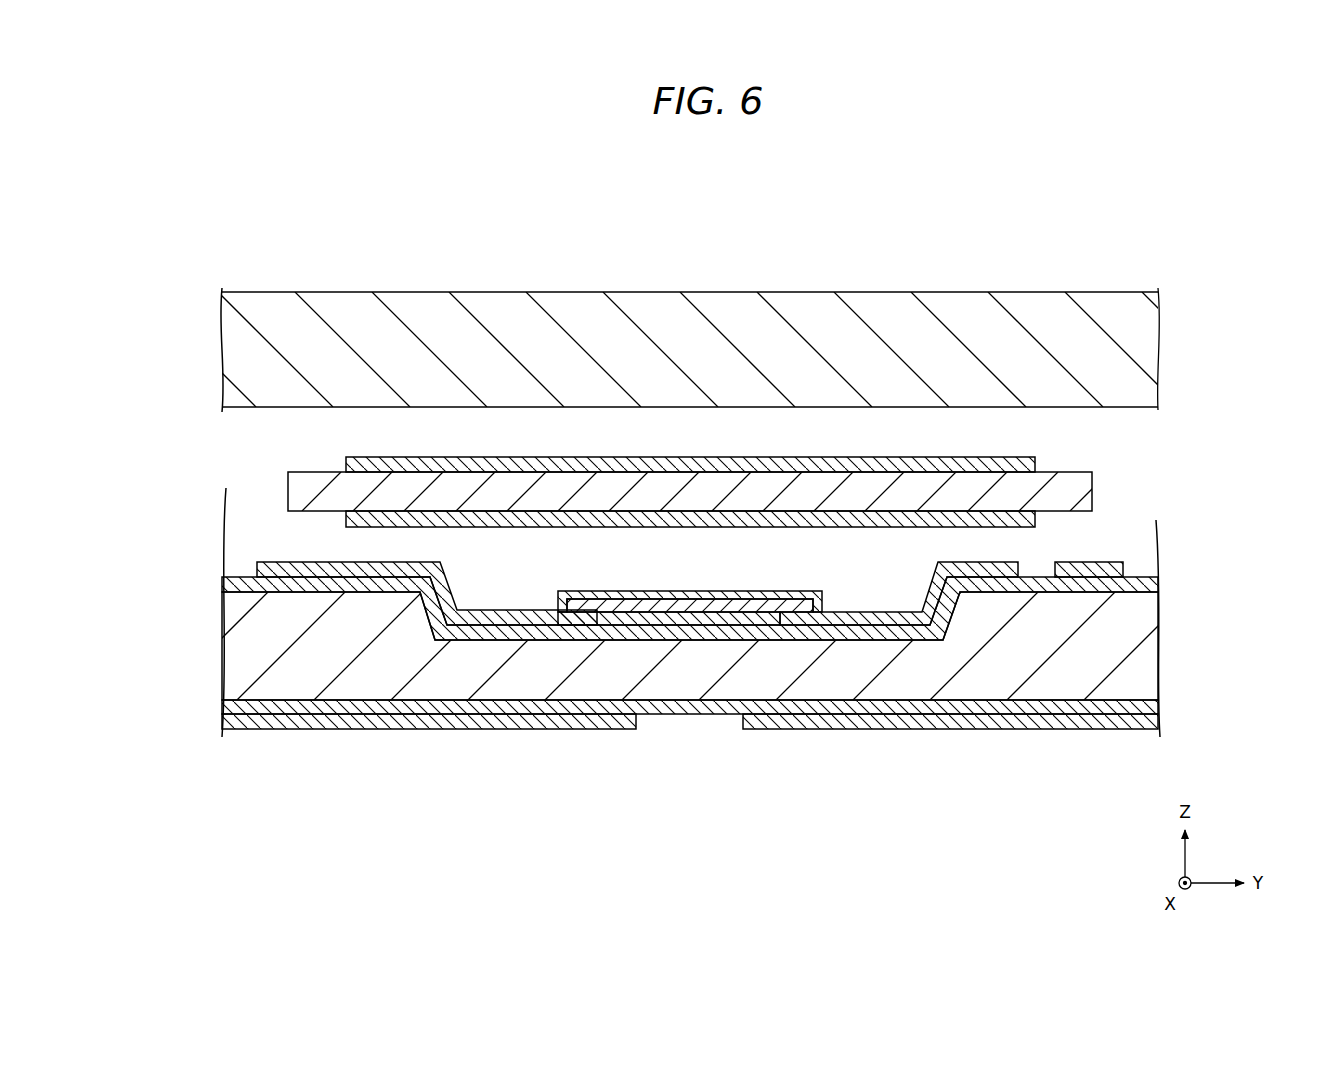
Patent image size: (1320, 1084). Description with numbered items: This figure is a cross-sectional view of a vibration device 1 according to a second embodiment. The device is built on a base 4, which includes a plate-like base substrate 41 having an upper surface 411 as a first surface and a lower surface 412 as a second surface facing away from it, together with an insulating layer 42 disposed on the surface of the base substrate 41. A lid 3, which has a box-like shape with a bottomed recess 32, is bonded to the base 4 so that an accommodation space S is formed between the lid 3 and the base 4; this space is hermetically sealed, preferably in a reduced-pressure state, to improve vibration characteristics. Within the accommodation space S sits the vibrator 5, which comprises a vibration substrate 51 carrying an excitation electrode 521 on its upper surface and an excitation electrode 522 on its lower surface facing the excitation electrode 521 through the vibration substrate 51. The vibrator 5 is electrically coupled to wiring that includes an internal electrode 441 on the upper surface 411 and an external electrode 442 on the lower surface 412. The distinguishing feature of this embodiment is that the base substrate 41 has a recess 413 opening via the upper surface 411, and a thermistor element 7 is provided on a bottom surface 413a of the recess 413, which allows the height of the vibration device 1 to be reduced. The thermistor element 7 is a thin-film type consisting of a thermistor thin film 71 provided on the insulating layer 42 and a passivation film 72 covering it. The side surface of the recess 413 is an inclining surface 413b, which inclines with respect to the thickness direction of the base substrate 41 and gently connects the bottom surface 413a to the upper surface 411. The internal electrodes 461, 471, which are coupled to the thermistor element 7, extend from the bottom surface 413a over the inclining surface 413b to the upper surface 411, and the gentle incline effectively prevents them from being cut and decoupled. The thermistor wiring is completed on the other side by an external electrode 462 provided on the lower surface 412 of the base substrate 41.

The vibration device 1 is at (1151, 221).
The lid 3 is at (520, 352).
The recess 32 is at (404, 409).
The accommodation space S is at (262, 440).
The base 4 is at (206, 562).
The base substrate 41 is at (398, 665).
The upper surface 411 is at (300, 559).
The lower surface 412 is at (708, 702).
The recess 413 is at (683, 641).
The bottom surface 413a is at (620, 633).
The inclining surface 413b is at (403, 615).
The insulating layer 42 is at (258, 594).
The internal electrode 441 is at (1087, 560).
The external electrode 442 is at (1076, 731).
The internal electrode 461 is at (522, 622).
The external electrode 462 is at (463, 731).
The internal electrode 471 is at (830, 616).
The vibrator 5 is at (842, 452).
The vibration substrate 51 is at (1007, 487).
The excitation electrode 521 is at (957, 457).
The excitation electrode 522 is at (897, 528).
The thermistor element 7 is at (692, 586).
The thermistor thin film 71 is at (740, 590).
The passivation film 72 is at (612, 590).